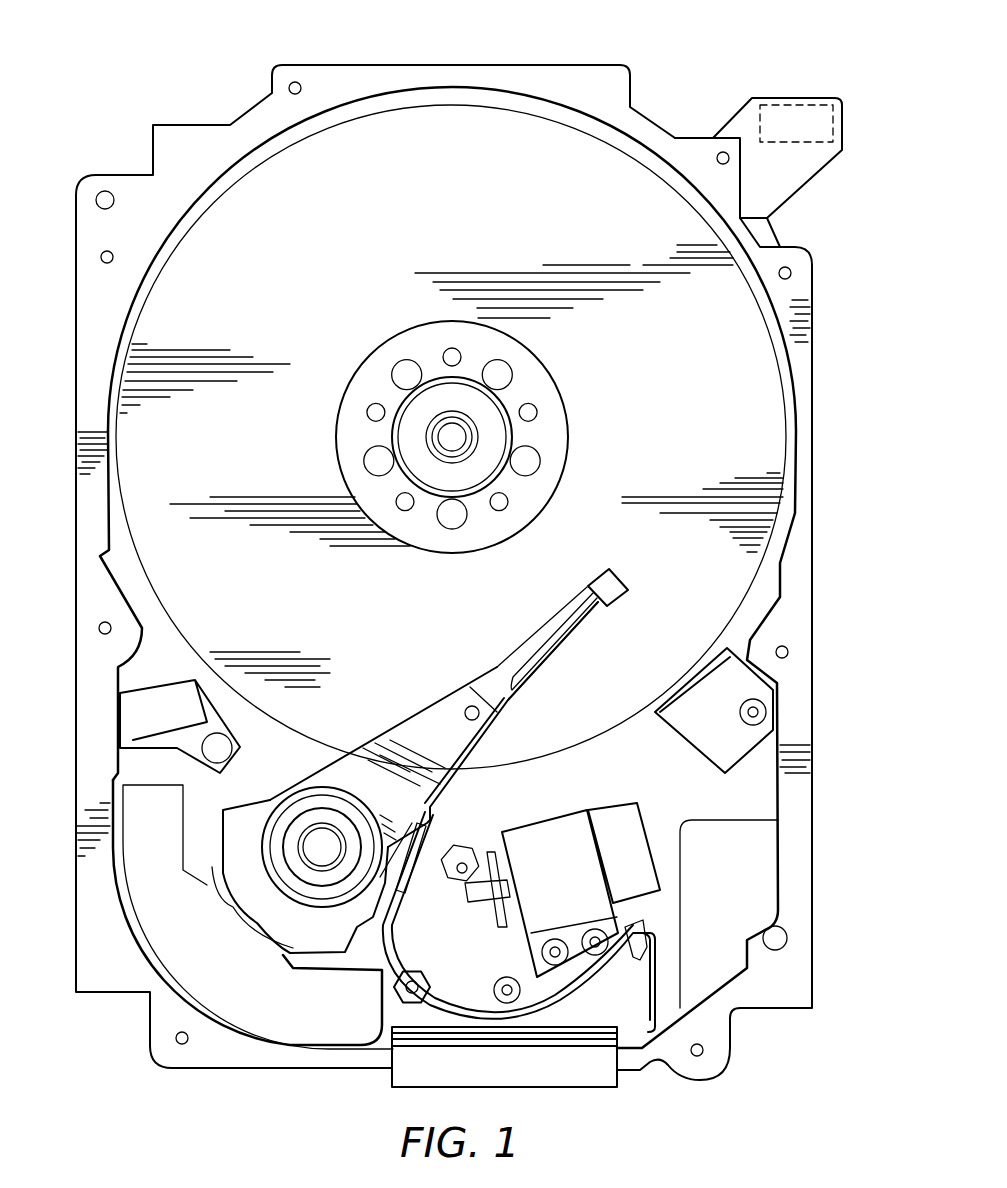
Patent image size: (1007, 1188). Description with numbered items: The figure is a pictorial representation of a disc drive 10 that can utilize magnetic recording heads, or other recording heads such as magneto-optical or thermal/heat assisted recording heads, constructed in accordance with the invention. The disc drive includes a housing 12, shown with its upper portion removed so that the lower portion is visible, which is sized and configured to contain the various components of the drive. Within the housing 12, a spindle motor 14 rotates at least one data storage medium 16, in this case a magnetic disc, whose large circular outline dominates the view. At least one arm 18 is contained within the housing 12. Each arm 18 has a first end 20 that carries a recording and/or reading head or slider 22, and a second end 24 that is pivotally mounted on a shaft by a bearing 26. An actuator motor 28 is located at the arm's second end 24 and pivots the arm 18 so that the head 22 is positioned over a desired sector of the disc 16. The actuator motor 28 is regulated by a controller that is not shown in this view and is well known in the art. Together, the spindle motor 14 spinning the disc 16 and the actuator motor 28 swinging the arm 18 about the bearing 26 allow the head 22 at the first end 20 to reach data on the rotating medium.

The disc drive 10 is at (130, 100).
The housing 12 is at (585, 78).
The spindle motor 14 is at (447, 442).
The data storage medium 16 is at (368, 239).
The arm 18 is at (437, 727).
The first end 20 is at (552, 613).
The head or slider 22 is at (607, 583).
The second end 24 is at (347, 785).
The bearing 26 is at (313, 837).
The actuator motor 28 is at (216, 964).